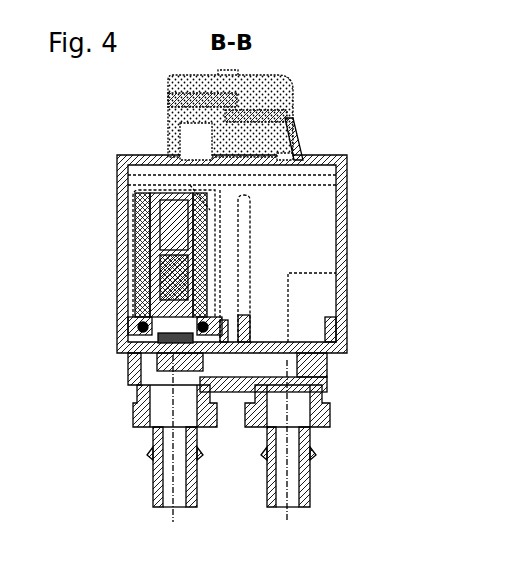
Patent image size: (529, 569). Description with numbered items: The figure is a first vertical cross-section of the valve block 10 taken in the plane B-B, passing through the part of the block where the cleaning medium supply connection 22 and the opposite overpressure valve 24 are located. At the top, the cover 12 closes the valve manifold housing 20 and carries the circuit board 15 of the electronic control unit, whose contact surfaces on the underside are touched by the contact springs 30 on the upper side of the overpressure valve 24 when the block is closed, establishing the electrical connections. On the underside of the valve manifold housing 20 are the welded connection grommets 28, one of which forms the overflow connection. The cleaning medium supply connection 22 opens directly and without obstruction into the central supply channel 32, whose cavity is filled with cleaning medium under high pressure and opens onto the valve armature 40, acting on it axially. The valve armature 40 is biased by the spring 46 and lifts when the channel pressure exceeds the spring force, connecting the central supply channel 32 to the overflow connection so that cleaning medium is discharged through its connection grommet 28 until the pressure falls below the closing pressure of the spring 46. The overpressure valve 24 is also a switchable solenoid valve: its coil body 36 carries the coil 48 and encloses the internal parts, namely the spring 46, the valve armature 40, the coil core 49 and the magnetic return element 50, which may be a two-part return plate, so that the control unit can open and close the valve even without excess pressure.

The valve block 10 is at (338, 90).
The cover 12 is at (176, 198).
The circuit board 15 is at (300, 153).
The valve manifold housing 20 is at (348, 195).
The cleaning medium supply connection 22 is at (302, 399).
The overpressure valve 24 is at (160, 236).
The connection grommet 28 is at (165, 486).
The contact spring 30 is at (143, 188).
The central supply channel 32 is at (305, 368).
The coil body 36 is at (136, 225).
The valve armature 40 is at (165, 338).
The spring 46 is at (138, 327).
The coil 48 is at (165, 280).
The coil core 49 is at (175, 200).
The magnetic return element 50 is at (205, 205).